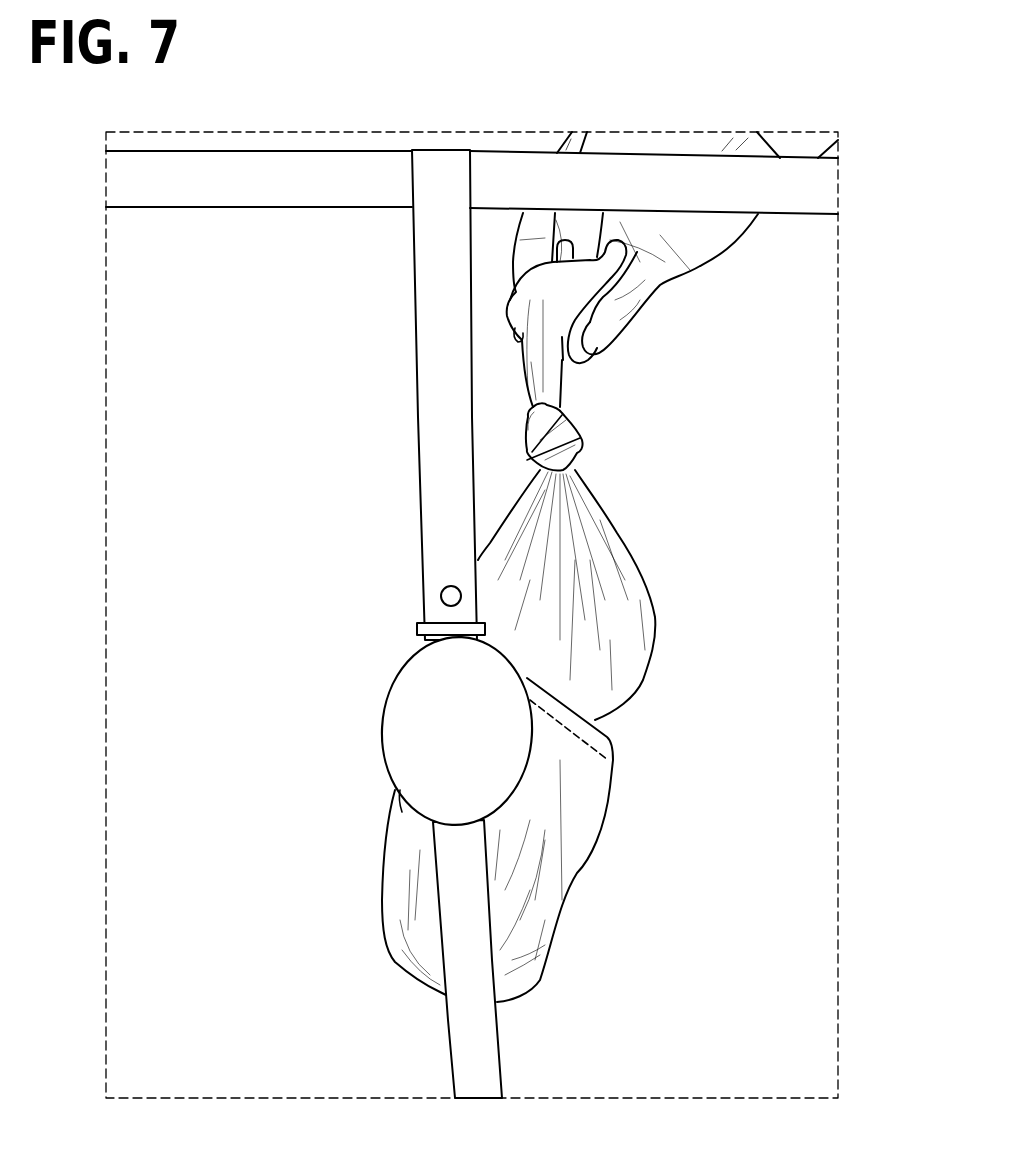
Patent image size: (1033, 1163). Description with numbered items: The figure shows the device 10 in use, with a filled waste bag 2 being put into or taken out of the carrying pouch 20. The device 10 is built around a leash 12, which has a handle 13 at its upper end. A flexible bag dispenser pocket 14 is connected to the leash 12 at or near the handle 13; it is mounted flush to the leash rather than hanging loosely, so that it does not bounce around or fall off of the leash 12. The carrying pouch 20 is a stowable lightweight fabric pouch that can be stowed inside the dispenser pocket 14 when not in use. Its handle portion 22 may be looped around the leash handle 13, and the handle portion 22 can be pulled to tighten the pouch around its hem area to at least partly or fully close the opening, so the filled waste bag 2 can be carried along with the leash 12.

The device 10 is at (802, 307).
The filled waste bag 2 is at (630, 548).
The leash 12 is at (447, 1070).
The handle 13 is at (411, 367).
The flexible bag dispenser pocket 14 is at (384, 738).
The carrying pouch 20 is at (611, 785).
The handle portion 22 is at (421, 619).